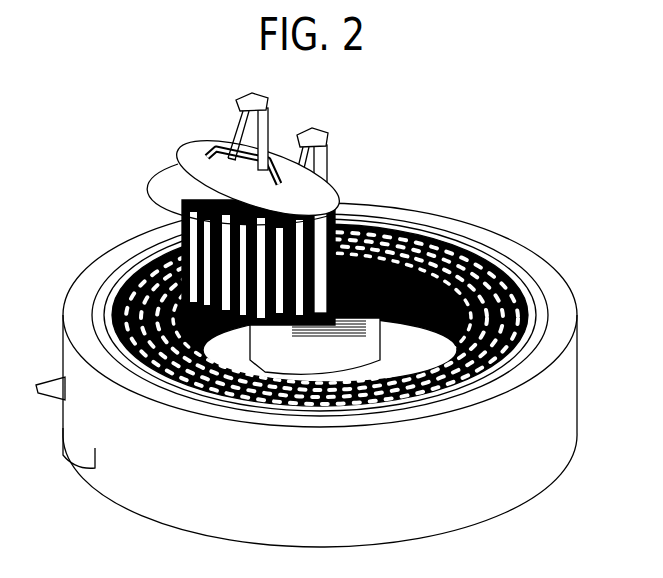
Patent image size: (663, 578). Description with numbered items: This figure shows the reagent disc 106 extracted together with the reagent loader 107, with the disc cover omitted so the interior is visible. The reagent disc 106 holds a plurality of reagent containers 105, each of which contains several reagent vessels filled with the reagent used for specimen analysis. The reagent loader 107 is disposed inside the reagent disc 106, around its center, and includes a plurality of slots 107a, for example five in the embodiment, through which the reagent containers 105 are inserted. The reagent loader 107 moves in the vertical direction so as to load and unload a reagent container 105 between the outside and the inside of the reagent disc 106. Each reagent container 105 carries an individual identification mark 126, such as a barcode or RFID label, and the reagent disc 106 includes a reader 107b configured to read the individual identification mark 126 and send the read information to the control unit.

The reagent container 105 is at (330, 395).
The reagent disc 106 is at (433, 217).
The reagent loader 107 is at (270, 192).
The slot 107a is at (307, 290).
The reader 107b is at (317, 220).
The individual identification mark 126 is at (287, 313).